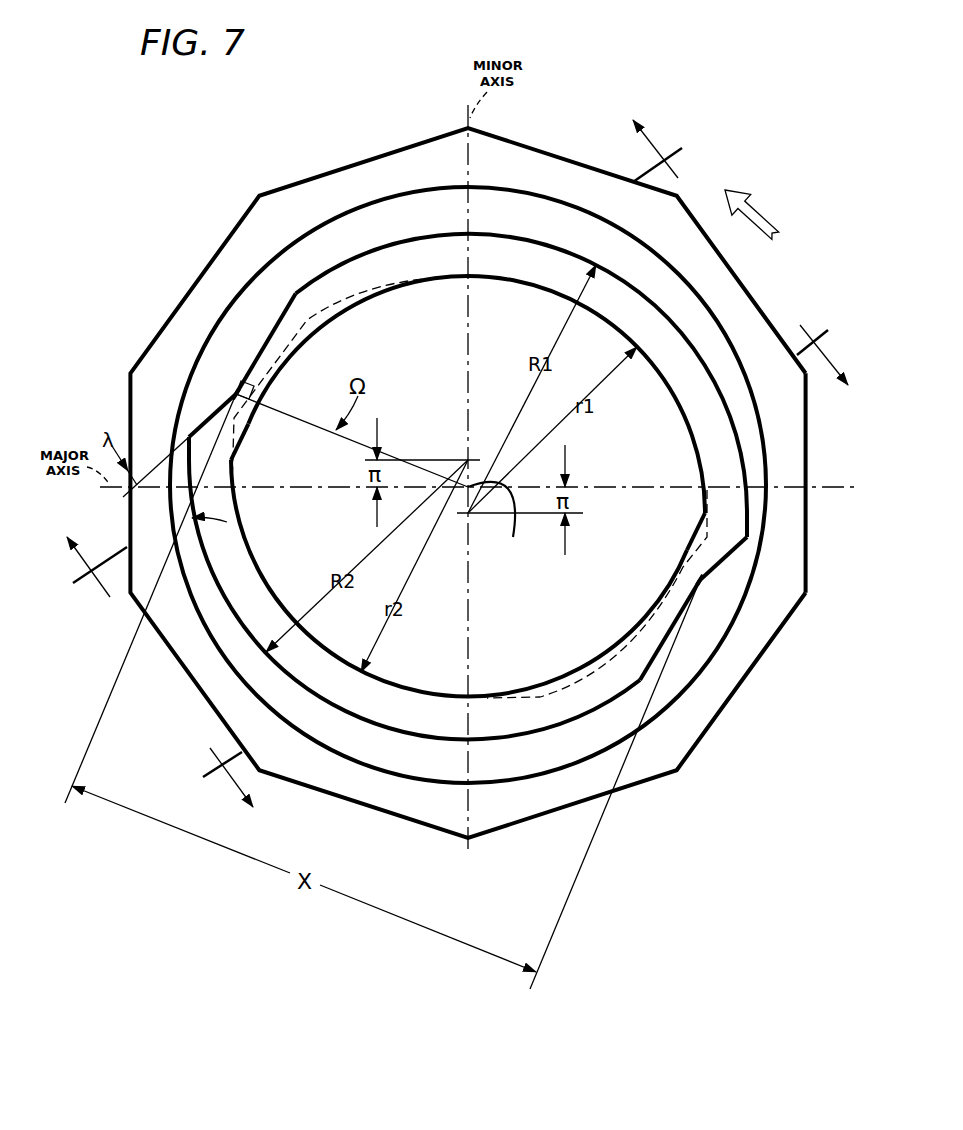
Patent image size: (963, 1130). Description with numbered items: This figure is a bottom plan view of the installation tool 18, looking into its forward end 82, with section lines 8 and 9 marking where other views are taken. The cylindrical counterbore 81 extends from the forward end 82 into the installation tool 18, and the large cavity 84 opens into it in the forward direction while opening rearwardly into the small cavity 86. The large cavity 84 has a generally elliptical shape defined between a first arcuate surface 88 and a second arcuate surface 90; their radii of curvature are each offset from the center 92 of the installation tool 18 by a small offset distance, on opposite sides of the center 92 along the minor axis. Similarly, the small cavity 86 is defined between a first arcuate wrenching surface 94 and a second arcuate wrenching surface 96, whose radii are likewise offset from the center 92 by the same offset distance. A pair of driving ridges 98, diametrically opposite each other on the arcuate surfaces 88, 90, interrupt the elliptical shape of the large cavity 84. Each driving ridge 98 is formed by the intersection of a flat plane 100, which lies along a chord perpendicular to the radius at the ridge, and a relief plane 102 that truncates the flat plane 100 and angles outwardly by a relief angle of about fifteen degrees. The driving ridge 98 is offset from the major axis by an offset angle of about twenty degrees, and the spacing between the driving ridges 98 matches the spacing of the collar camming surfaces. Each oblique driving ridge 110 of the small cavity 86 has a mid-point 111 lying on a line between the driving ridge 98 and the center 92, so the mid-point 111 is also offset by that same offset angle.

The installation tool 18 is at (188, 185).
The cylindrical counterbore 81 is at (770, 463).
The forward end 82 is at (780, 538).
The large cavity 84 is at (728, 410).
The small cavity 86 is at (706, 462).
The first arcuate surface 88 is at (536, 242).
The second arcuate surface 90 is at (352, 708).
The center 92 is at (474, 512).
The first arcuate wrenching surface 94 is at (662, 370).
The second arcuate wrenching surface 96 is at (403, 686).
The driving ridge 98 is at (705, 583).
The flat plane 100 is at (666, 637).
The relief plane 102 is at (730, 558).
The oblique driving ridge 110 is at (252, 400).
The mid-point 111 is at (258, 397).
The section line 8- 8 is at (533, 579).
The section line 9- 9 is at (363, 343).